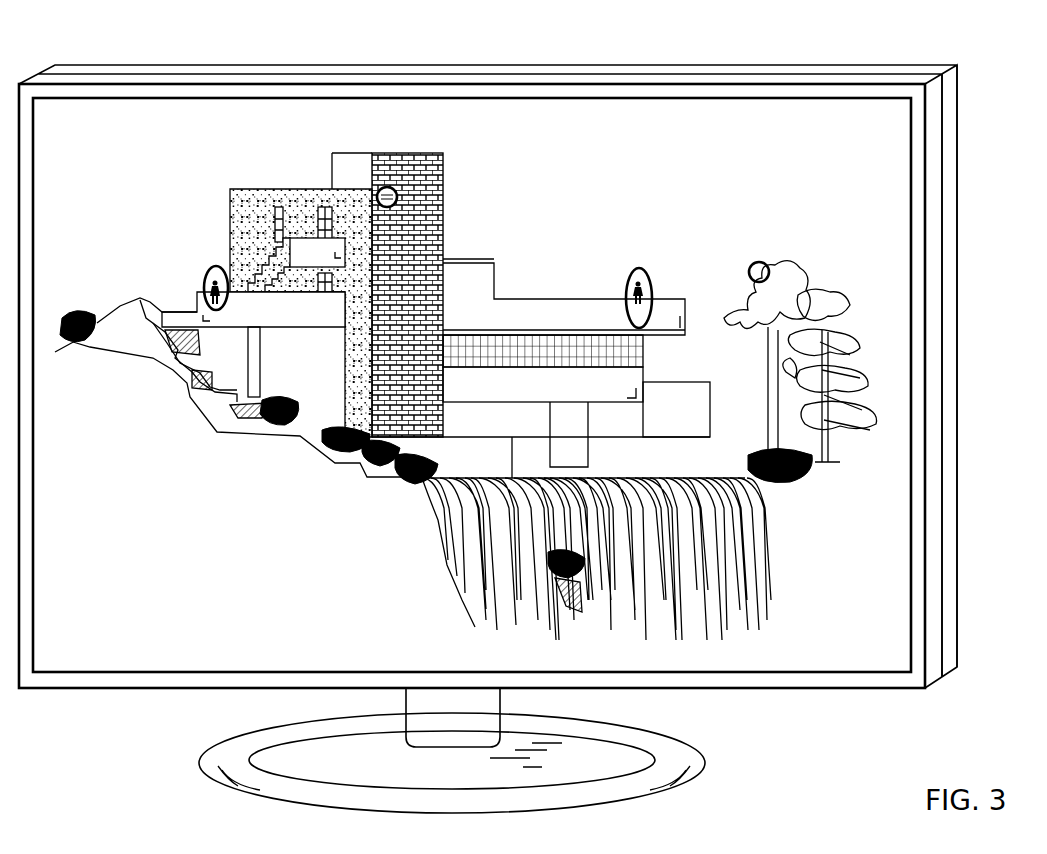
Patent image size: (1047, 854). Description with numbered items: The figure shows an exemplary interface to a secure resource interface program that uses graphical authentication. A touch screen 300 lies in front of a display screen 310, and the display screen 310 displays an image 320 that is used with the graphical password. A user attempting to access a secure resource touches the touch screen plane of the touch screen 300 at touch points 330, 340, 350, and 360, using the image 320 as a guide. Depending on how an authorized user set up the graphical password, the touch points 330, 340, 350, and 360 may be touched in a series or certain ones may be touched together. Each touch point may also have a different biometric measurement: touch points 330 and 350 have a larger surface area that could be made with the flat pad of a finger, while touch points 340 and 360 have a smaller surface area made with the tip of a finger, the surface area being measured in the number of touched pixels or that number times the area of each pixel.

The touch screen 300 is at (480, 82).
The display screen 310 is at (948, 124).
The image 320 is at (911, 227).
The touch point 330 is at (206, 270).
The touch point 340 is at (378, 191).
The touch point 350 is at (639, 268).
The touch point 360 is at (762, 262).